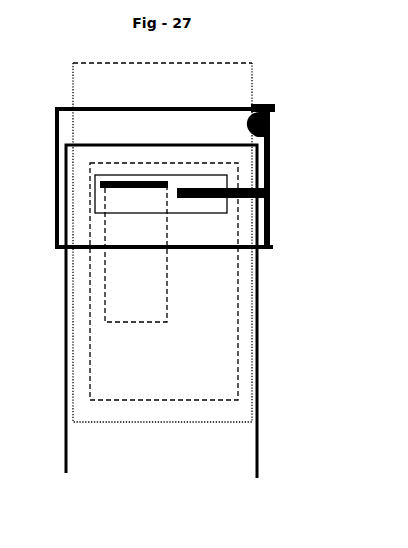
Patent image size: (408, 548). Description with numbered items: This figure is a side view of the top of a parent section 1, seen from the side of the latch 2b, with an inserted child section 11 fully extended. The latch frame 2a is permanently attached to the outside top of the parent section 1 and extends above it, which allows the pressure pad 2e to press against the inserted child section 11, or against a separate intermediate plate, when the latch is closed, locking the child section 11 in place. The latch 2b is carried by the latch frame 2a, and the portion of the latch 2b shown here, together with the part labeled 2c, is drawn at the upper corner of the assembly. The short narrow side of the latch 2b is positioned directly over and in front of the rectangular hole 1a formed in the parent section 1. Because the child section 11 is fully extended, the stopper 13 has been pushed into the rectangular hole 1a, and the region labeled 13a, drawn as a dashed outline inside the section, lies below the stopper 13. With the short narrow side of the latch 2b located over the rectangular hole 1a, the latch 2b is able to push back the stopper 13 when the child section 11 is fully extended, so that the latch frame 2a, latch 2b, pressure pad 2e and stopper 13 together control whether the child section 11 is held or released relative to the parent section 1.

The parent section 1 is at (149, 311).
The rectangular hole 1a is at (176, 176).
The latch frame 2a is at (199, 264).
The latch 2b is at (273, 163).
The connection portion 2c is at (278, 103).
The pressure pad 2e is at (247, 122).
The child section 11 is at (148, 242).
The stopper 13 is at (122, 181).
The electrode region 13a is at (164, 281).